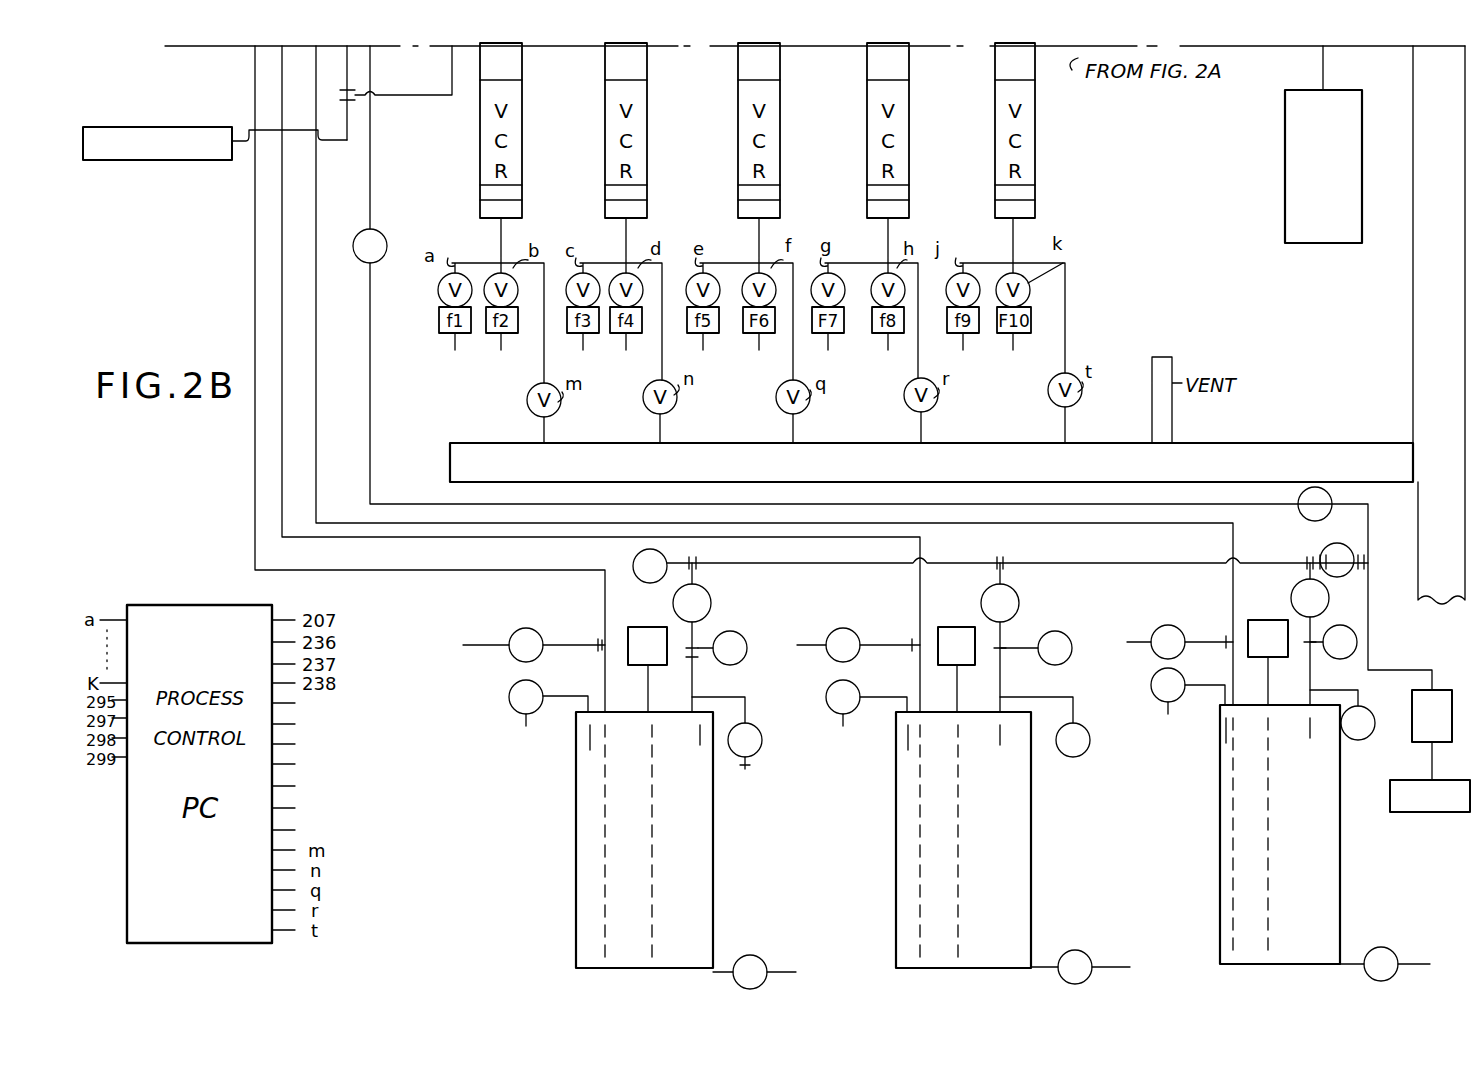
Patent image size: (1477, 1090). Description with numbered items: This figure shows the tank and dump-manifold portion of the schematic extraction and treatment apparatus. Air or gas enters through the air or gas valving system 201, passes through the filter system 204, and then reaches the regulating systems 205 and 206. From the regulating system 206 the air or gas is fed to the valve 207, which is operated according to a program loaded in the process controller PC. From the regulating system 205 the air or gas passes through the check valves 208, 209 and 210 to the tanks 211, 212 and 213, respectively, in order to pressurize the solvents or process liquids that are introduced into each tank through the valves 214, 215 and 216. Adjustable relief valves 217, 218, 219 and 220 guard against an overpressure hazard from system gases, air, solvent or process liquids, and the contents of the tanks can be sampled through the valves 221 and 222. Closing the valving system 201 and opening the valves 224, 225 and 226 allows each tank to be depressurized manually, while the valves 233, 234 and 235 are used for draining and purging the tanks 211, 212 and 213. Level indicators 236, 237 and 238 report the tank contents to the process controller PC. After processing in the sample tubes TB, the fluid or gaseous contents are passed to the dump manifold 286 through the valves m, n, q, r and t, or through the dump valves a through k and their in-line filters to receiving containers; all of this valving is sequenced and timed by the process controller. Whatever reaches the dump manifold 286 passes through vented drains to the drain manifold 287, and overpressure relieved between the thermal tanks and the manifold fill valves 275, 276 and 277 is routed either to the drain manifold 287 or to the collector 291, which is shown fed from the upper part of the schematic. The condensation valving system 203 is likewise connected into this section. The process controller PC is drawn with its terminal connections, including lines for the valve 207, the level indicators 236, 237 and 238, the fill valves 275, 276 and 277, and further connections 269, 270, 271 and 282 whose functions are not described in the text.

The air or gas valving system 201 is at (1430, 818).
The condensation valving system 203 is at (200, 128).
The filter system 204 is at (1412, 750).
The regulating system 205 is at (1328, 548).
The regulating system 206 is at (1311, 486).
The valve 207 is at (382, 237).
The check valve 208 is at (1298, 584).
The check valve 209 is at (1020, 606).
The check valve 210 is at (712, 606).
The tank 211 is at (1220, 845).
The tank 212 is at (896, 850).
The tank 213 is at (576, 852).
The valve 214 is at (1350, 656).
The valve 215 is at (1072, 668).
The valve 216 is at (755, 674).
The adjustable relief valve 217 is at (1372, 712).
The adjustable relief valve 218 is at (1088, 752).
The adjustable relief valve 219 is at (770, 764).
The adjustable relief valve 220 is at (666, 560).
The sampling valve 221 is at (1153, 700).
The sampling valve 222 is at (830, 708).
The valve 224 is at (1198, 610).
The valve 225 is at (876, 612).
The valve 226 is at (562, 622).
The drain and purge valve 233 is at (512, 708).
The drain and purge valve 234 is at (1100, 942).
The drain and purge valve 235 is at (778, 945).
The level indicator 236 is at (1284, 610).
The level indicator 237 is at (968, 616).
The level indicator 238 is at (660, 616).
The process control connection 269 is at (304, 703).
The process control connection 270 is at (304, 724).
The process control connection 271 is at (304, 744).
The manifold fill valve 275 is at (304, 764).
The manifold fill valve 276 is at (304, 786).
The manifold fill valve 277 is at (304, 808).
The process control connection 282 is at (304, 830).
The dump manifold 286 is at (931, 462).
The drain manifold 287 is at (1440, 325).
The collector 291 is at (1340, 246).